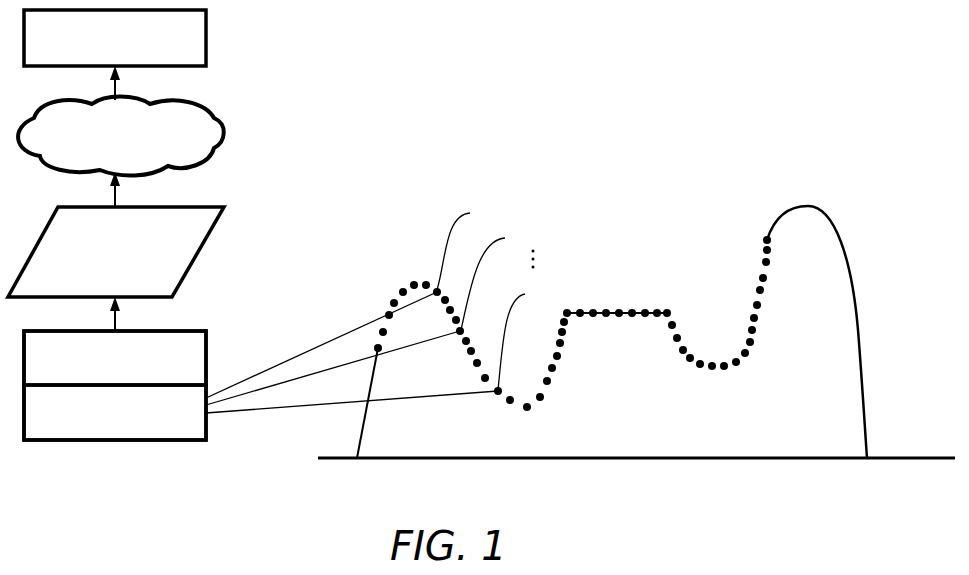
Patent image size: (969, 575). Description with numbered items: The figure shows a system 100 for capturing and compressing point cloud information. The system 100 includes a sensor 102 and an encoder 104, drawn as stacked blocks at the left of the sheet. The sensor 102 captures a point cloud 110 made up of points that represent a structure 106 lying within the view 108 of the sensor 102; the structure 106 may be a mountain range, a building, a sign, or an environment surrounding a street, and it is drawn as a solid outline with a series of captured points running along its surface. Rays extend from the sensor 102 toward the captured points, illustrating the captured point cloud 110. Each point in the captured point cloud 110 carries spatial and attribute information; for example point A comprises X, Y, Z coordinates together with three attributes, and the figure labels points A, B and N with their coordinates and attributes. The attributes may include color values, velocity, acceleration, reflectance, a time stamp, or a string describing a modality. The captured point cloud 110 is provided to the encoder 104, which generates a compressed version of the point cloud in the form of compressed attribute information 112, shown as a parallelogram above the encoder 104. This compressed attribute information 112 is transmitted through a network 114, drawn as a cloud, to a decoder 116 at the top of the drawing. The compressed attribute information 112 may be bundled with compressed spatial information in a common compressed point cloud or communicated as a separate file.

The system 100 is at (208, 320).
The sensor 102 is at (115, 412).
The encoder 104 is at (115, 358).
The structure 106 is at (858, 342).
The view 108 is at (411, 221).
The captured point cloud 110 is at (323, 372).
The compressed attribute information 112 is at (116, 252).
The network 114 is at (121, 136).
The decoder 116 is at (115, 38).